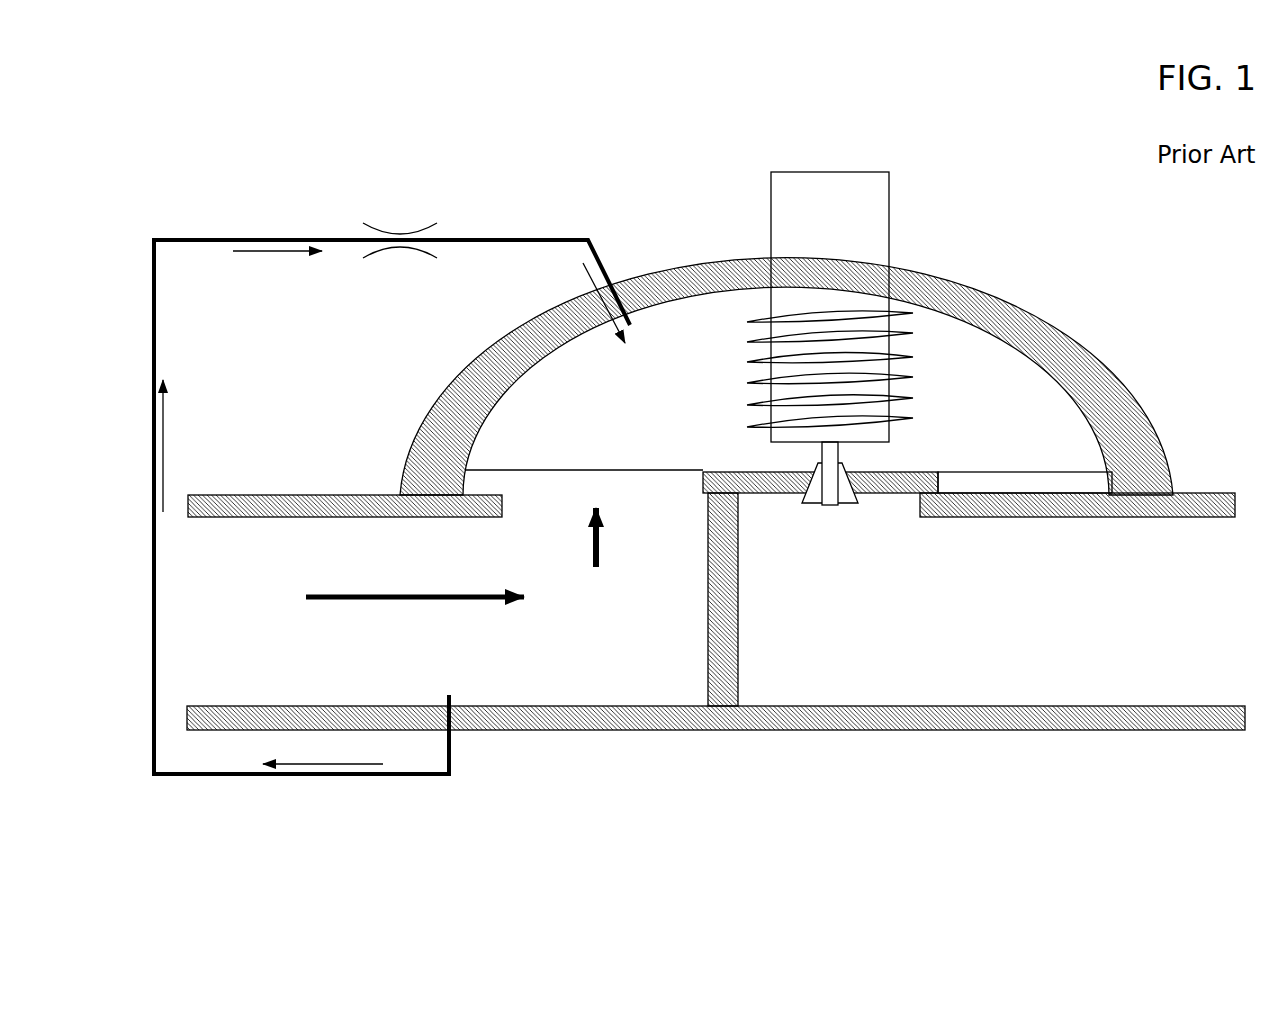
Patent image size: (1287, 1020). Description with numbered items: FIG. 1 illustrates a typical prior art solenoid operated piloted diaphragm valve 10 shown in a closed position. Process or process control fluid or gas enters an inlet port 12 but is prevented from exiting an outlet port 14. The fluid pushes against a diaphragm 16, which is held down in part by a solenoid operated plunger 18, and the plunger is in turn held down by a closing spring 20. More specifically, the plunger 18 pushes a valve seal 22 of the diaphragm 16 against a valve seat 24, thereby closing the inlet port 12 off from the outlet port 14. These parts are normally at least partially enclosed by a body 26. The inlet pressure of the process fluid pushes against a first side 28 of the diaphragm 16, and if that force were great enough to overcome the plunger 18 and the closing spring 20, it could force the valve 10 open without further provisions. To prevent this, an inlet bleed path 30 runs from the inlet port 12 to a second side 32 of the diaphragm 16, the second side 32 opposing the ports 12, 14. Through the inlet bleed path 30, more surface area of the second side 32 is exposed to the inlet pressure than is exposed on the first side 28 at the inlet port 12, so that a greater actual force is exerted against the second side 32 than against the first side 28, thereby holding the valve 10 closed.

The solenoid operated piloted diaphragm valve 10 is at (307, 105).
The inlet port 12 is at (280, 657).
The outlet port 14 is at (1127, 672).
The diaphragm 16 is at (508, 470).
The solenoid operated plunger 18 is at (868, 212).
The closing spring 20 is at (912, 335).
The valve seal 22 is at (715, 478).
The valve seat 24 is at (750, 505).
The body 26 is at (688, 263).
The first side of the diaphragm 28 is at (650, 540).
The inlet bleed path 30 is at (165, 240).
The second side of the diaphragm 32 is at (1032, 450).